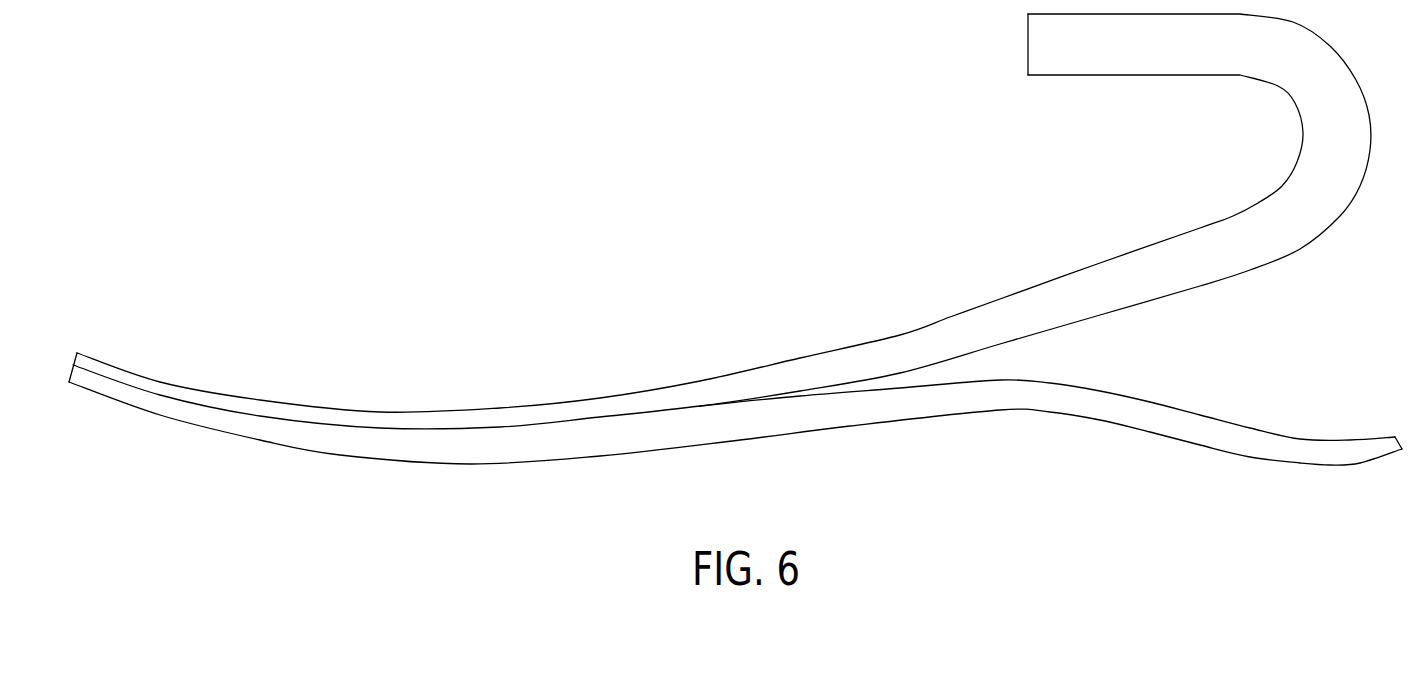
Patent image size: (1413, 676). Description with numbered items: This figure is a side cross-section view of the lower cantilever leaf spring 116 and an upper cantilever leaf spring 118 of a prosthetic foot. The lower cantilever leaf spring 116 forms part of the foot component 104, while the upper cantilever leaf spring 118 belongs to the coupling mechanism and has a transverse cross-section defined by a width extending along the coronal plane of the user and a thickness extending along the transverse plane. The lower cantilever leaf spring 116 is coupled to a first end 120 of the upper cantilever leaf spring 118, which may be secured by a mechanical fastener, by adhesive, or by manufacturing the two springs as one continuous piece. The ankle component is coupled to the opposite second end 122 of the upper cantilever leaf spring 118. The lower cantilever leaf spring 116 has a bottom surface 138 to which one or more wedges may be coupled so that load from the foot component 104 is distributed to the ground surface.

The foot component 104 is at (732, 278).
The lower cantilever leaf spring 116 is at (735, 466).
The upper cantilever leaf spring 118 is at (722, 216).
The first end 120 is at (88, 326).
The second end 122 is at (985, 28).
The bottom surface 138 is at (445, 470).